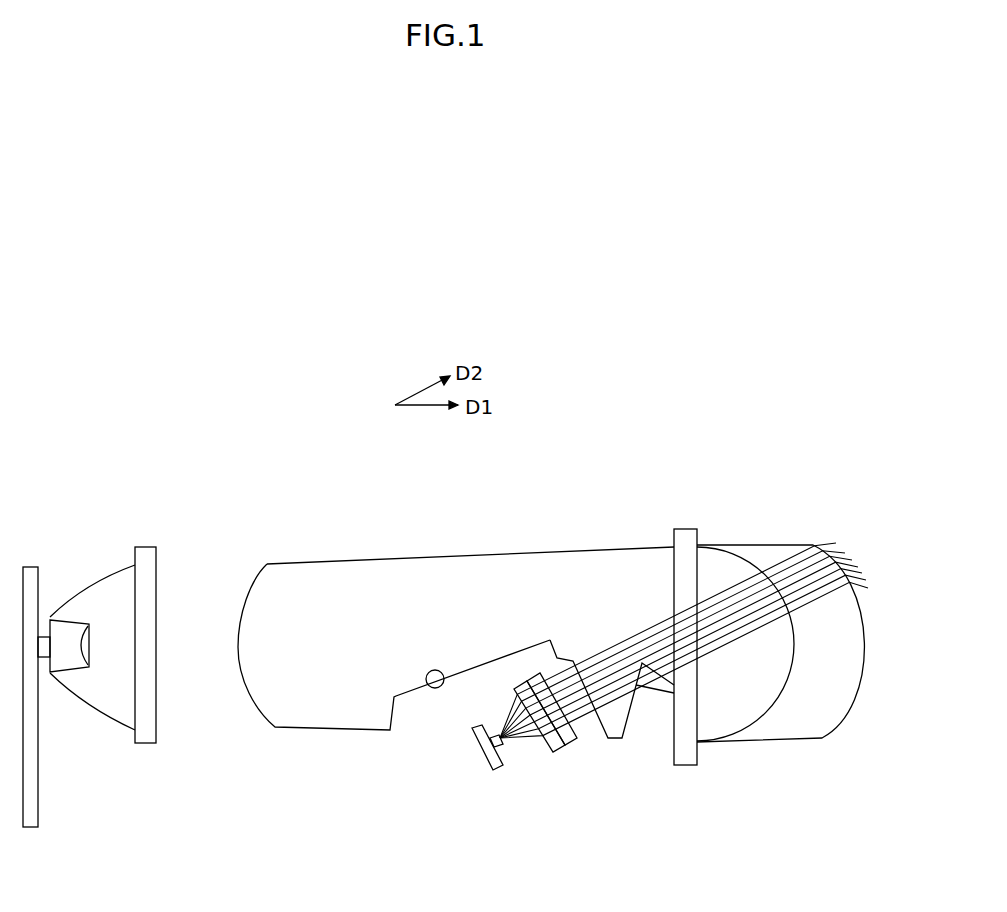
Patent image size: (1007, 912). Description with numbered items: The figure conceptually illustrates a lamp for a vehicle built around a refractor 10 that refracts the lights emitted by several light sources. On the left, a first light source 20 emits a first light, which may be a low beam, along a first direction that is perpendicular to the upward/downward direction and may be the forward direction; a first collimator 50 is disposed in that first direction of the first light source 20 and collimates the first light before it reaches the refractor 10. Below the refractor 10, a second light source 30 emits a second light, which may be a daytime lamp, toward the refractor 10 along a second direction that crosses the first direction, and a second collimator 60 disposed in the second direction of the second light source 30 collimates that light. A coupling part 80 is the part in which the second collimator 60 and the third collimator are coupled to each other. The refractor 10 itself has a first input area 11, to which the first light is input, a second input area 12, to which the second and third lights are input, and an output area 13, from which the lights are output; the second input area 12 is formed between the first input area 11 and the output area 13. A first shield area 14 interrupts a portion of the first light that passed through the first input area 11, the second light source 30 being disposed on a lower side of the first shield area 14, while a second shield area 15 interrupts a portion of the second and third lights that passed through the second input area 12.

The refractor 10 is at (568, 551).
The first input area 11 is at (248, 590).
The second input area 12 is at (594, 695).
The output area 13 is at (847, 585).
The first shield area 14 is at (428, 688).
The second shield area 15 is at (633, 699).
The first light source 20 is at (40, 637).
The second light source 30 is at (510, 748).
The first collimator 50 is at (110, 717).
The second collimator 60 is at (528, 752).
The coupling part 80 is at (550, 753).